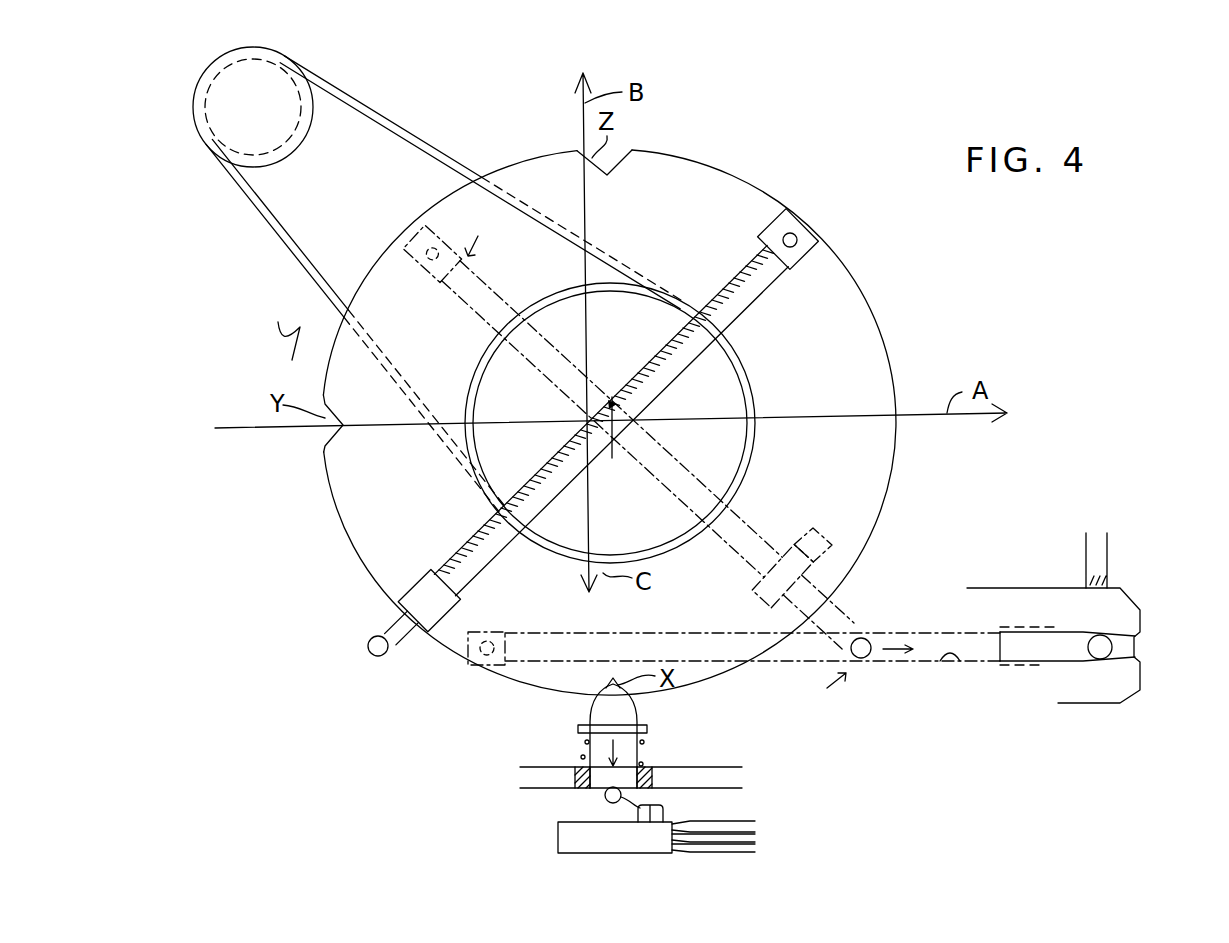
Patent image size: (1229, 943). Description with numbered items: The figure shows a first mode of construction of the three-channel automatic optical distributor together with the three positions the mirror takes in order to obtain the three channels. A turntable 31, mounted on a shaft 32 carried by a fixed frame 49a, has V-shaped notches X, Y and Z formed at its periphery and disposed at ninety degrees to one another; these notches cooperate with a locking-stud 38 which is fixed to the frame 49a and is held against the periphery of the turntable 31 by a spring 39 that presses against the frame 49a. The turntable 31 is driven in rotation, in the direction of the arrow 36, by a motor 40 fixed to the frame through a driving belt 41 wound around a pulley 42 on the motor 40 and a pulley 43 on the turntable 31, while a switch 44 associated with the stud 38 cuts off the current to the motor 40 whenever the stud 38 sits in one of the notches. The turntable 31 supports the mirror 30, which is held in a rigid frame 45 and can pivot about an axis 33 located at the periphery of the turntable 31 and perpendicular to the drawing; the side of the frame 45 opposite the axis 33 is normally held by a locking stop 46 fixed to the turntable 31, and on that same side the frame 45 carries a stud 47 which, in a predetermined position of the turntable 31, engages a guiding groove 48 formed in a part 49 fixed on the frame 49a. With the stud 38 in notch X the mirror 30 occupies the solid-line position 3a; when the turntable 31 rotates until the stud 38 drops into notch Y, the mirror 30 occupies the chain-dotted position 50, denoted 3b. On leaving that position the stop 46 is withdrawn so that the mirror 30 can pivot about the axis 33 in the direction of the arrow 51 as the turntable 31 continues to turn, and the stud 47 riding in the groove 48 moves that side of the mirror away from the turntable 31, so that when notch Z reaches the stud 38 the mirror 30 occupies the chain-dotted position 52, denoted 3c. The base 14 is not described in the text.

The base 14 is at (260, 430).
The mirror 30 is at (765, 282).
The turntable 31 is at (875, 312).
The shaft 32 is at (614, 423).
The axis 33 is at (815, 235).
The arrow 36 is at (281, 325).
The locking-stud 38 is at (598, 714).
The spring 39 is at (645, 750).
The motor 40 is at (258, 76).
The driving belt 41 is at (420, 145).
The pulley 42 is at (280, 160).
The pulley 43 is at (748, 388).
The switch 44 is at (560, 845).
The frame 45 is at (780, 217).
The locking stop 46 is at (432, 634).
The stud 47 is at (364, 641).
The guiding groove 48 is at (958, 655).
The part 49 is at (1013, 588).
The frame 49a is at (1108, 560).
The position 50 is at (667, 495).
The arrow 51 is at (465, 265).
The position 52 is at (607, 632).
The position of the mirror 3a is at (723, 290).
The position of the mirror 3b is at (782, 552).
The position of the mirror 3c is at (985, 661).